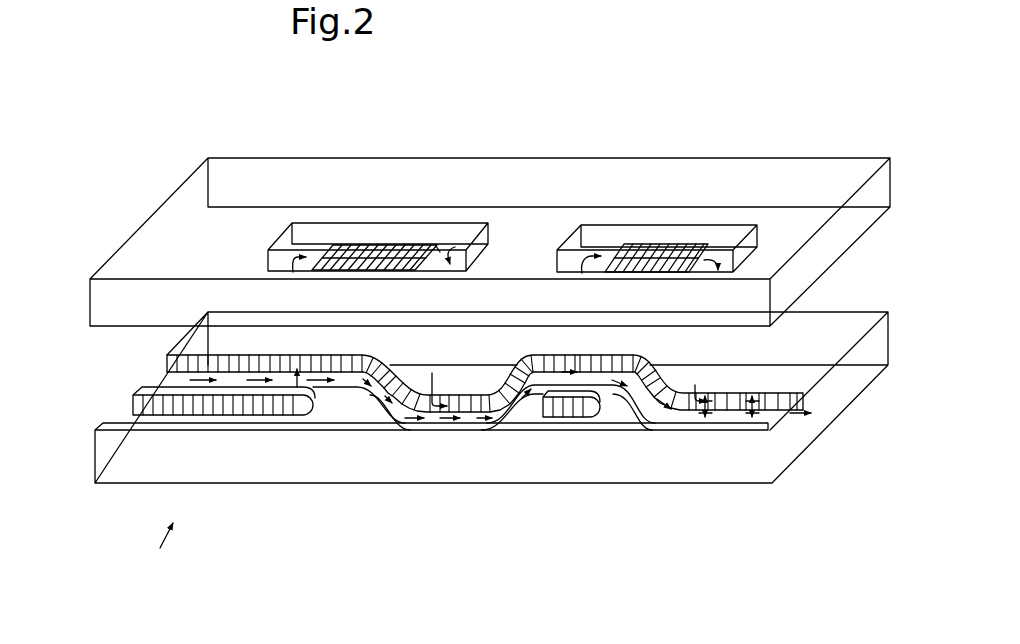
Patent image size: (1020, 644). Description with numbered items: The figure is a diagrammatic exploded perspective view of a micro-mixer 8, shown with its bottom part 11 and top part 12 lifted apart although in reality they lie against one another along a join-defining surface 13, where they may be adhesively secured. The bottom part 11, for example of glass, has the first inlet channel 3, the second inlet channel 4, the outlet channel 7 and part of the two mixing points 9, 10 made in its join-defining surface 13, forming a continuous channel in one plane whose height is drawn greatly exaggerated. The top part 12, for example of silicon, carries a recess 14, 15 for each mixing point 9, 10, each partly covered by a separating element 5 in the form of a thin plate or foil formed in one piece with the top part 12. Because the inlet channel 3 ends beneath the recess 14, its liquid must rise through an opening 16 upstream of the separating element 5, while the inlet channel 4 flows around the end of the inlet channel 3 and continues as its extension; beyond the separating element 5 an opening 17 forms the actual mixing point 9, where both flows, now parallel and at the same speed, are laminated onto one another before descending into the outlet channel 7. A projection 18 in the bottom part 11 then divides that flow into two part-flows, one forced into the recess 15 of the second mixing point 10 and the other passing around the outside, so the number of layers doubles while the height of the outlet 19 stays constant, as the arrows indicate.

The inlet channel 3 is at (130, 415).
The inlet channel 4 is at (149, 379).
The separating element 5 is at (397, 245).
The outlet channel 7 is at (462, 407).
The mixer 8 is at (156, 551).
The mixing point 9 is at (458, 246).
The mixing point 10 is at (722, 258).
The bottom part 11 is at (410, 466).
The top part 12 is at (779, 171).
The join-defining surface 13 is at (816, 361).
The recess 14 is at (312, 223).
The recess 15 is at (597, 224).
The opening 16 is at (305, 257).
The opening 17 is at (440, 245).
The projection 18 is at (548, 393).
The outlet 19 is at (823, 410).